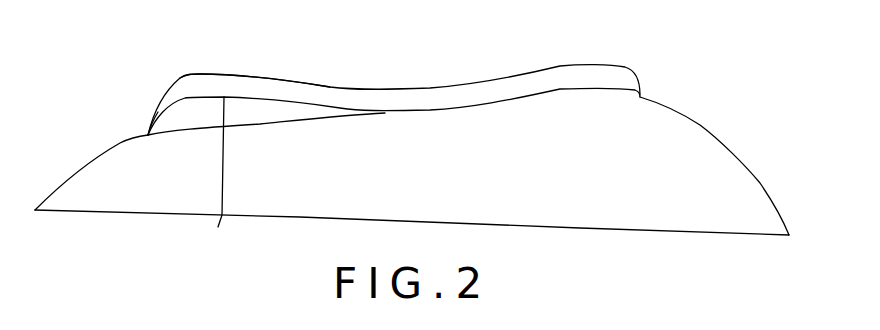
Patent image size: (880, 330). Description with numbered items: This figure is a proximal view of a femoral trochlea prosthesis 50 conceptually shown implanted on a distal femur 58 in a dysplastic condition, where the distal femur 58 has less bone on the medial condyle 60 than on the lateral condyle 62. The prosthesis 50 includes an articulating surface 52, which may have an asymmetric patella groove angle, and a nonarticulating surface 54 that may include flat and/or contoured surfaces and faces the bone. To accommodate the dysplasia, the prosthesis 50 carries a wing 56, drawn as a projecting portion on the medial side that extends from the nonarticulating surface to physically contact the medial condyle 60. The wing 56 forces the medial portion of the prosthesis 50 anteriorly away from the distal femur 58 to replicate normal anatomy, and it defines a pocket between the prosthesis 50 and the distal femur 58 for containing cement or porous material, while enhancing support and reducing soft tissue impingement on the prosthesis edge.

The femoral trochlea prosthesis 50 is at (340, 82).
The articulating surface 52 is at (220, 73).
The nonarticulating surface 54 is at (230, 252).
The wing 56 is at (150, 118).
The distal femur 58 is at (640, 220).
The medial condyle 60 is at (188, 162).
The lateral condyle 62 is at (617, 130).